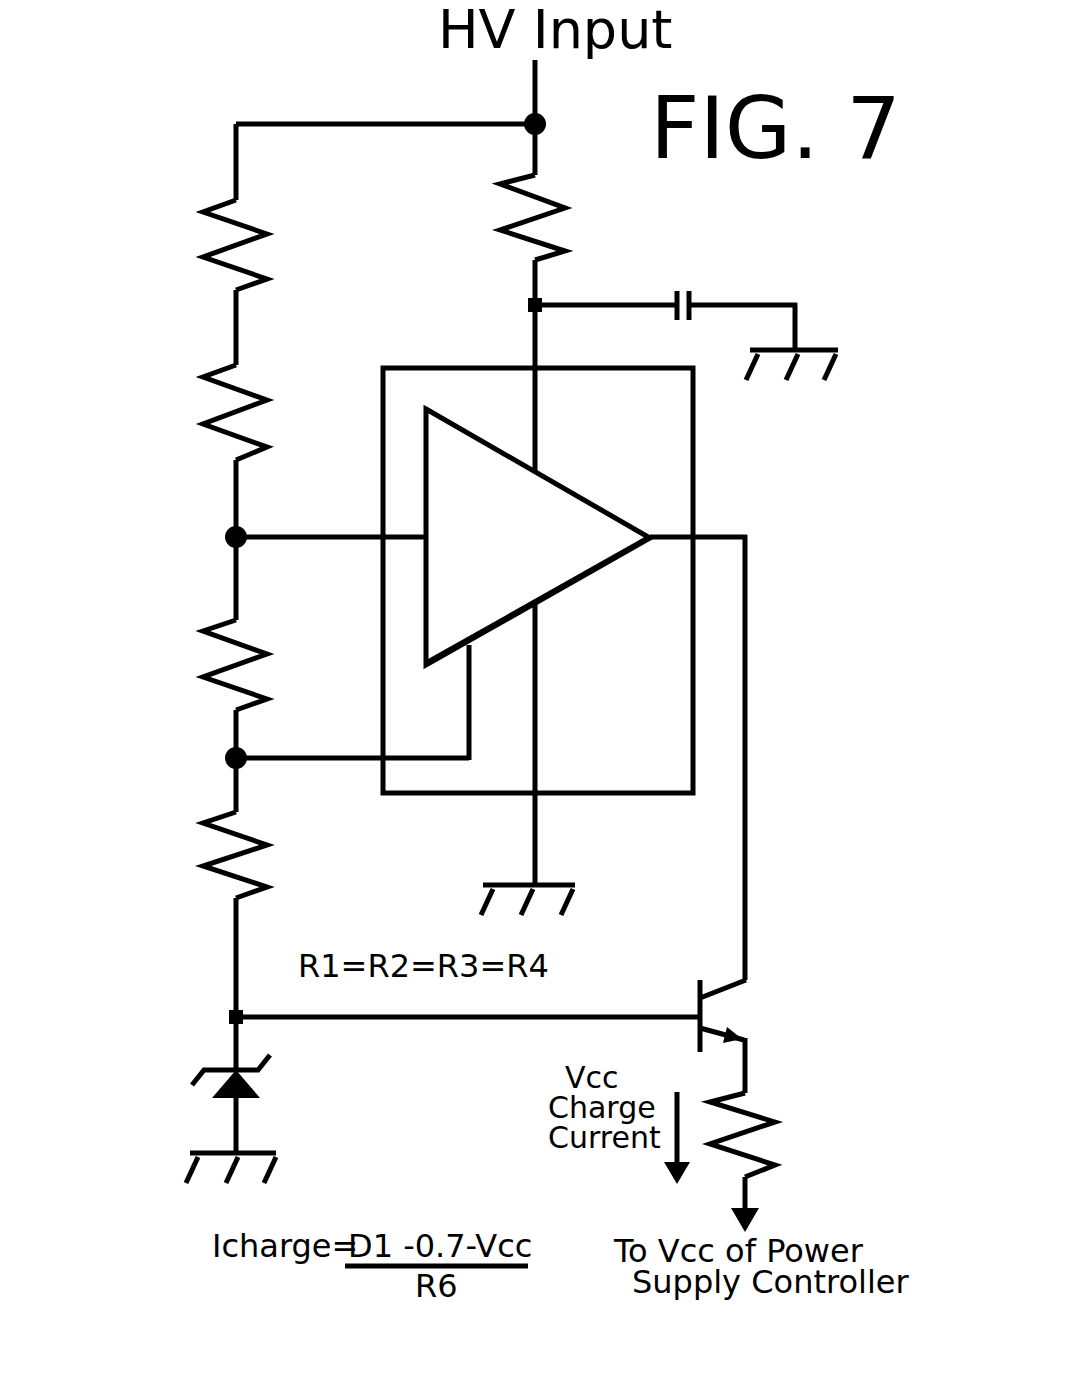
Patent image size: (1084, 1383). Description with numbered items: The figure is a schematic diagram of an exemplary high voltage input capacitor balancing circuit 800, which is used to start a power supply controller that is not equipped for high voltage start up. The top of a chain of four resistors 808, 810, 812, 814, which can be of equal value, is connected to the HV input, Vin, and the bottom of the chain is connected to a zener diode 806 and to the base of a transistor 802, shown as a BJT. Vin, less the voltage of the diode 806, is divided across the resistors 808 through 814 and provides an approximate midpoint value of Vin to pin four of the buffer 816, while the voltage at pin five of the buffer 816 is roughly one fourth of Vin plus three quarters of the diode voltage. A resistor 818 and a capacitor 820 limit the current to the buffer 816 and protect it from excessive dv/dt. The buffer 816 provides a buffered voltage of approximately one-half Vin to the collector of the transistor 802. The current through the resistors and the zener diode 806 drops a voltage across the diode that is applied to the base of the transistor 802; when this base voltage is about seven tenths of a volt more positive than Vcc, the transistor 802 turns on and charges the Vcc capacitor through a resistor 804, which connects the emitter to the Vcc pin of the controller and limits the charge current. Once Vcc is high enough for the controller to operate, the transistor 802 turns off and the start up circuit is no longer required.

The high voltage input capacitor balancing circuit 800 is at (842, 562).
The transistor 802 is at (774, 976).
The resistor 804 is at (828, 1118).
The zener diode 806 is at (286, 1103).
The resistor 808 is at (145, 242).
The resistor 810 is at (147, 416).
The resistor 812 is at (157, 610).
The resistor 814 is at (141, 818).
The X1 buffer 816 is at (700, 442).
The resistor 818 is at (630, 230).
The capacitor 820 is at (706, 284).